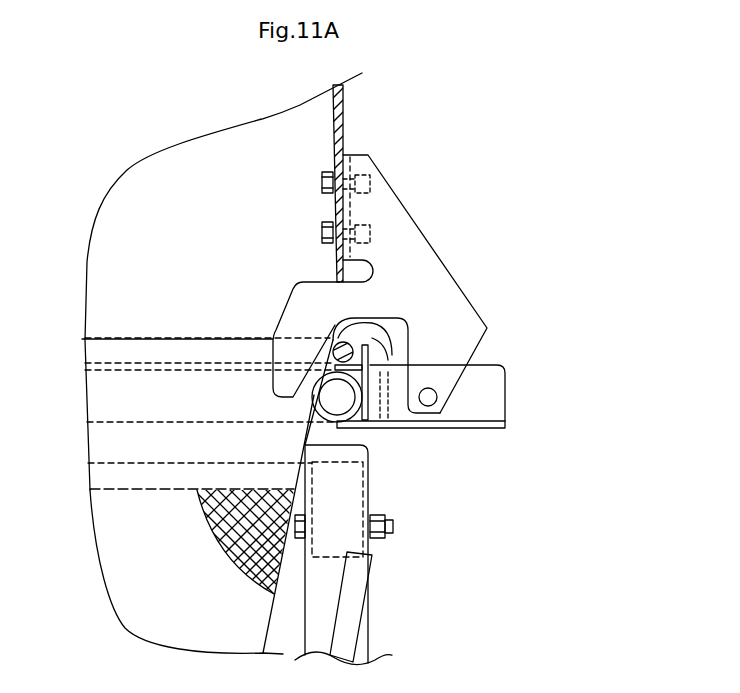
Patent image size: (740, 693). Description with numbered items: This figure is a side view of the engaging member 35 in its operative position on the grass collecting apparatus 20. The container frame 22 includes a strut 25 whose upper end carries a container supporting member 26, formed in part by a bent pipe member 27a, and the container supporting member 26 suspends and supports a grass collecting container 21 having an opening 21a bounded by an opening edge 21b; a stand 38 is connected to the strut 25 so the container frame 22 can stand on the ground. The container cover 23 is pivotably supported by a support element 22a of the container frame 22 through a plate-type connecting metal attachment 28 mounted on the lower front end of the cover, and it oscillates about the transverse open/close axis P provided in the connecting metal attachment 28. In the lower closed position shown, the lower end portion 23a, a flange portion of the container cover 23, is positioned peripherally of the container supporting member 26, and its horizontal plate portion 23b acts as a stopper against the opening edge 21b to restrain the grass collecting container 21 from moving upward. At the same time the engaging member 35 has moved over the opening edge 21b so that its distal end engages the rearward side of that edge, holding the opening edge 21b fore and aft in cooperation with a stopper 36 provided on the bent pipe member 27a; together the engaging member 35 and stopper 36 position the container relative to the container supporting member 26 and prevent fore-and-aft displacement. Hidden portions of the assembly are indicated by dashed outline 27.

The mounting structure 20 is at (485, 261).
The grass collecting container 21 is at (132, 600).
The opening 21a is at (180, 333).
The opening edge 21b is at (362, 316).
The container frame 22 is at (437, 393).
The support element 22a is at (465, 432).
The container cover 23 is at (342, 113).
The lower end portion 23a is at (142, 422).
The horizontal plate portion 23b is at (345, 335).
The strut 25 is at (350, 488).
The container supporting member 26 is at (370, 367).
The hidden rib 27 is at (132, 366).
The bent pipe member 27a is at (362, 395).
The connecting metal attachment 28 is at (440, 268).
The engaging member 35 is at (303, 312).
The stopper 36 is at (368, 355).
The stand 38 is at (350, 622).
The open/close axis P is at (437, 397).